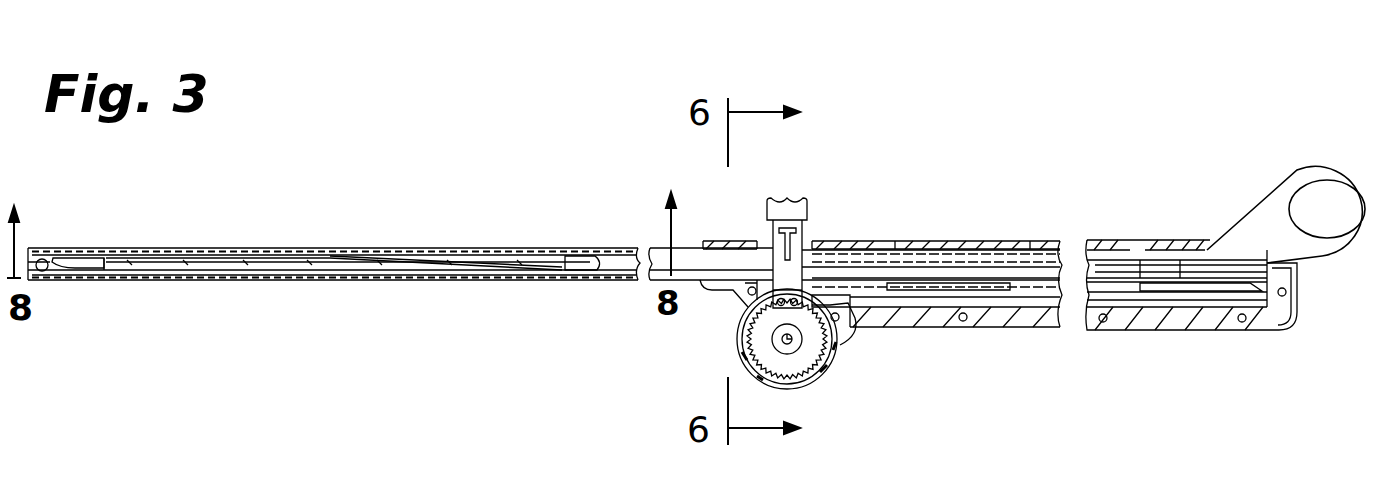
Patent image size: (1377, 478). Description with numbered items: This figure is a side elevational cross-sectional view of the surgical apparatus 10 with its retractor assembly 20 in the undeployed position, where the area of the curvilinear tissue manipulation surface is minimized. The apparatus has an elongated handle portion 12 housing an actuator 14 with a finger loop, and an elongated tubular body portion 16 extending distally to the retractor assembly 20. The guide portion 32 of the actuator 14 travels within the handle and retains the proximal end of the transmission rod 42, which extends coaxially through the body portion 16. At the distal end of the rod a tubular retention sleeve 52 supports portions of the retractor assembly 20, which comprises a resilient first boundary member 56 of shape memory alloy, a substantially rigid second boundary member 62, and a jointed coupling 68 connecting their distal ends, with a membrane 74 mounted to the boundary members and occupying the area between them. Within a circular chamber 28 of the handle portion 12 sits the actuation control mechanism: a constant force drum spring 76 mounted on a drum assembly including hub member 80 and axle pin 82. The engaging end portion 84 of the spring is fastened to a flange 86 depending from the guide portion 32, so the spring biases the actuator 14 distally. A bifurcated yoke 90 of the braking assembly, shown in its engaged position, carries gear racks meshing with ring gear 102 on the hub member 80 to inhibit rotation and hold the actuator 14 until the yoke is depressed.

The surgical apparatus 10 is at (597, 190).
The handle portion 12 is at (1020, 242).
The actuator 14 is at (1307, 168).
The tubular body portion 16 is at (235, 282).
The retractor assembly 20 is at (372, 262).
The circular chamber 28 is at (737, 340).
The guide portion 32 is at (1190, 267).
The transmission rod 42 is at (928, 262).
The tubular retention sleeve 52 is at (588, 270).
The first boundary member 56 is at (482, 258).
The second boundary member 62 is at (143, 271).
The jointed coupling 68 is at (52, 255).
The membrane 74 is at (322, 262).
The constant force drum spring 76 is at (862, 308).
The hub member 80 is at (805, 385).
The axle pin 82 is at (800, 342).
The engaging end portion 84 is at (1190, 307).
The flange 86 is at (1253, 330).
The bifurcated yoke 90 is at (793, 206).
The ring gear 102 is at (797, 363).